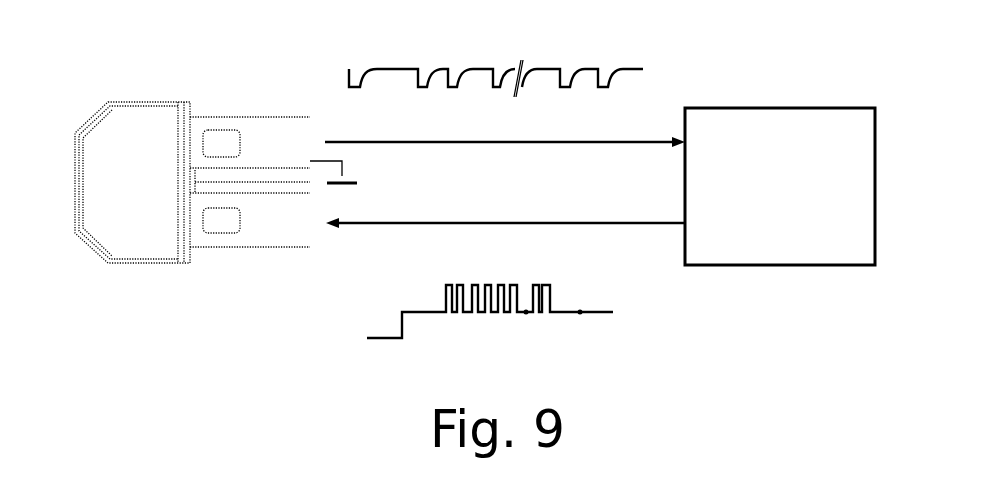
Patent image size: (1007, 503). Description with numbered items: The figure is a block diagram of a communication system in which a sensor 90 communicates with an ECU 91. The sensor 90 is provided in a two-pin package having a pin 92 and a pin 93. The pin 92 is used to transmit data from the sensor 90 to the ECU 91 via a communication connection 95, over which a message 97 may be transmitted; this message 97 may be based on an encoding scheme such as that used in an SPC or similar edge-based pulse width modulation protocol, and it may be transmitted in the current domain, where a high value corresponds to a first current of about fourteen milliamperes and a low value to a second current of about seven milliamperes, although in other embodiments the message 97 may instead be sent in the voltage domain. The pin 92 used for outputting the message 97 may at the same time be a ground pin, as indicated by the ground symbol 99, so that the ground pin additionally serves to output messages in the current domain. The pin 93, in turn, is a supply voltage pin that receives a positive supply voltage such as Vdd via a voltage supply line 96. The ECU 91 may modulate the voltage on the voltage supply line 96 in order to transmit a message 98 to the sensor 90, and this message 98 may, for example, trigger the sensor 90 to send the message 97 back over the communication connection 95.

The sensor 90 is at (140, 104).
The ECU 91 is at (777, 108).
The pin 92 is at (240, 118).
The pin 93 is at (218, 247).
The communication connection 95 is at (617, 142).
The voltage supply line 96 is at (513, 223).
The message 97 is at (592, 68).
The message 98 is at (562, 313).
The ground pin 99 is at (345, 174).